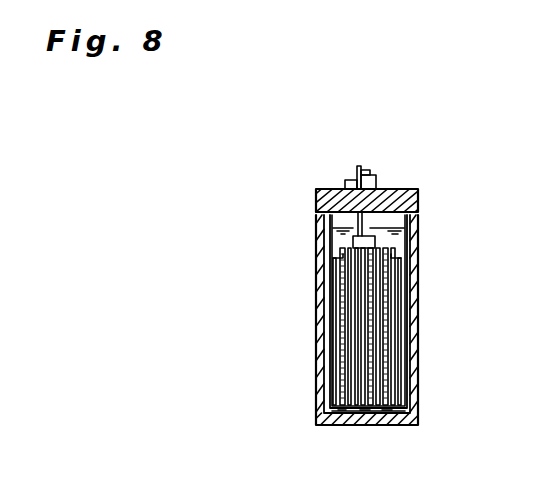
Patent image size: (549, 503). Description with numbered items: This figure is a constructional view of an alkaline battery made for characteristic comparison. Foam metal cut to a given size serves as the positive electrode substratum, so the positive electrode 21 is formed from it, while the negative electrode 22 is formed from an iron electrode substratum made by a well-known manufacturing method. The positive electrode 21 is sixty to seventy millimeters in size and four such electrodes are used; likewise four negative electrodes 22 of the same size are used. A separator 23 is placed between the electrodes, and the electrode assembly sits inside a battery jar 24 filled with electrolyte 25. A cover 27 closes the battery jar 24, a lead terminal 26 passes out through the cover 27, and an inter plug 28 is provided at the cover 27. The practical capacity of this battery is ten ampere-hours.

The positive electrode 21 is at (390, 350).
The negative electrode 22 is at (396, 302).
The separator 23 is at (410, 418).
The battery jar 24 is at (410, 240).
The electrolyte 25 is at (309, 418).
The lead terminal 26 is at (352, 162).
The cover 27 is at (411, 185).
The inter plug 28 is at (333, 180).